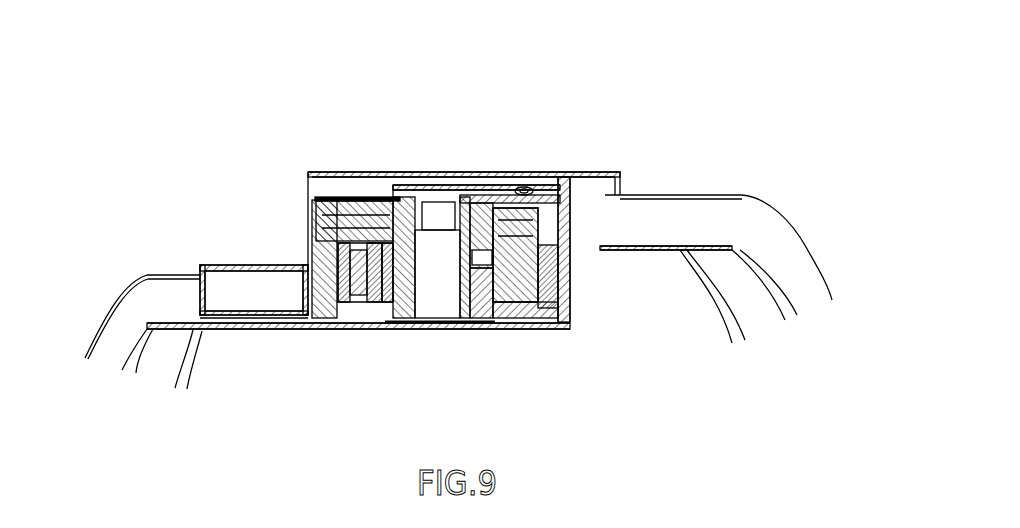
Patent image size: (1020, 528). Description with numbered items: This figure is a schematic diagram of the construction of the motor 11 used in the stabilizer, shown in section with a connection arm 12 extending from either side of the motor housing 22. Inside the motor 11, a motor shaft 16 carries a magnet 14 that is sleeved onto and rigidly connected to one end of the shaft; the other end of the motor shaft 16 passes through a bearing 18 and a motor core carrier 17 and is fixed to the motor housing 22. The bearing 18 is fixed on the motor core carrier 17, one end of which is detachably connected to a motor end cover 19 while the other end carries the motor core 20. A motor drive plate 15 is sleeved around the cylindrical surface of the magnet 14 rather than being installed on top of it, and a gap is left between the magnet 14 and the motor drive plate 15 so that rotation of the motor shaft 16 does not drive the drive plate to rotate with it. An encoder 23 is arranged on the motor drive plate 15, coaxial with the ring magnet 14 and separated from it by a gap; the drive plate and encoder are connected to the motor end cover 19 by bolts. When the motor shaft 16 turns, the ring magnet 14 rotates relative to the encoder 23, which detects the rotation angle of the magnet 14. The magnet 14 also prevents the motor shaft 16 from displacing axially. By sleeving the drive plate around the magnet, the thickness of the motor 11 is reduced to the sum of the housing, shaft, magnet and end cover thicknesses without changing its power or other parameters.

The motor 11 is at (308, 198).
The connection arm 12 is at (165, 293).
The magnet 14 is at (412, 198).
The motor drive plate 15 is at (345, 198).
The motor shaft 16 is at (478, 318).
The motor core carrier 17 is at (548, 218).
The bearing 18 is at (418, 290).
The motor end cover 19 is at (465, 178).
The motor core 20 is at (536, 290).
The motor housing 22 is at (333, 318).
The encoder 23 is at (520, 190).